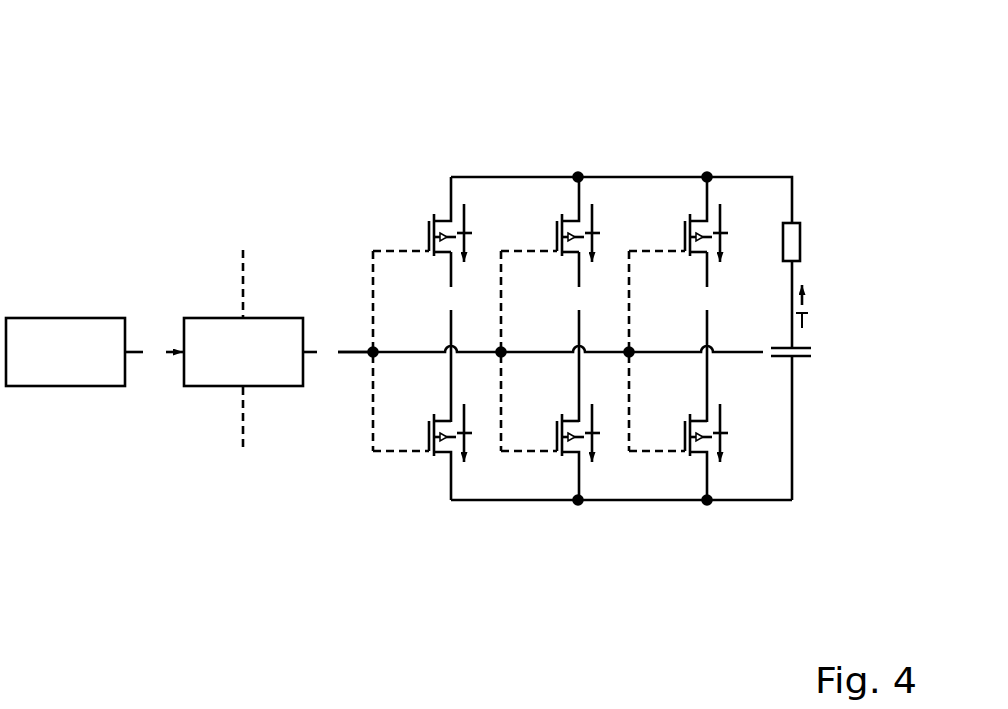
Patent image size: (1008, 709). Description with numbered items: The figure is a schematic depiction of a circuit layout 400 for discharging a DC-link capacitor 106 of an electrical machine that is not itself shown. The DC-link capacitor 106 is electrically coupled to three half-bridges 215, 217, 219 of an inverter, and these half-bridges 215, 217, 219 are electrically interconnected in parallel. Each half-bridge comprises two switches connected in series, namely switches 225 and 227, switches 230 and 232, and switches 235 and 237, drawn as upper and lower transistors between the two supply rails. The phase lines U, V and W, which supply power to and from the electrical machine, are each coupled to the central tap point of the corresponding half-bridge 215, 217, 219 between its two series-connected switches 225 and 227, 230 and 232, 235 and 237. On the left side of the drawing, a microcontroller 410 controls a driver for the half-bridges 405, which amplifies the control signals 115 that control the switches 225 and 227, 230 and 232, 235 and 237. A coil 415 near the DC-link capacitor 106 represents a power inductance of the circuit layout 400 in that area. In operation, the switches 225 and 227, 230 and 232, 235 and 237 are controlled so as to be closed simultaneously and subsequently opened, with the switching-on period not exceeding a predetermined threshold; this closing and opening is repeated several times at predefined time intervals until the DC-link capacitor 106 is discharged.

The circuit layout 400 is at (276, 173).
The coil 415 is at (800, 243).
The DC-link capacitor 106 is at (801, 357).
The microcontroller 410 is at (57, 387).
The driver for the half-bridges 405 is at (202, 387).
The control signals 115 is at (352, 354).
The half-bridge 215 is at (437, 297).
The half-bridge 217 is at (565, 297).
The half-bridge 219 is at (692, 297).
The switch 225 is at (438, 208).
The switch 230 is at (566, 208).
The switch 235 is at (693, 210).
The switch 227 is at (440, 465).
The switch 232 is at (565, 462).
The switch 237 is at (693, 462).